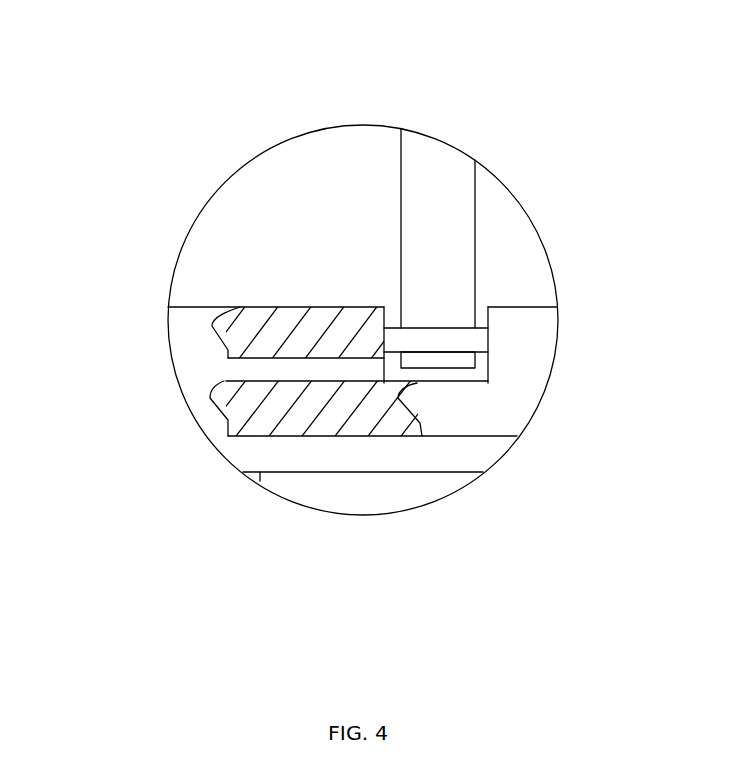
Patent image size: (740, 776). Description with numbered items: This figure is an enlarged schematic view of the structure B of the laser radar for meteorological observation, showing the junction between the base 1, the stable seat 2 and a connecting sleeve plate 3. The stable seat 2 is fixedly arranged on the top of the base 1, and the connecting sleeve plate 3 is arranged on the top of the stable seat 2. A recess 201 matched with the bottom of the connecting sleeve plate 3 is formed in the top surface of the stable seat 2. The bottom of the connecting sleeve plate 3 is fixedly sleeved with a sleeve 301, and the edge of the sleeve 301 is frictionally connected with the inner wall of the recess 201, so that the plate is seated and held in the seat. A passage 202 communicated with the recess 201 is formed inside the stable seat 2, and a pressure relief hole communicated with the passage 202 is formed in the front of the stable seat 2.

The base 1 is at (312, 453).
The stable seat 2 is at (197, 322).
The connecting sleeve plate 3 is at (424, 189).
The recess 201 is at (492, 387).
The passage 202 is at (262, 372).
The sleeve 301 is at (442, 342).
The structure B is at (263, 155).